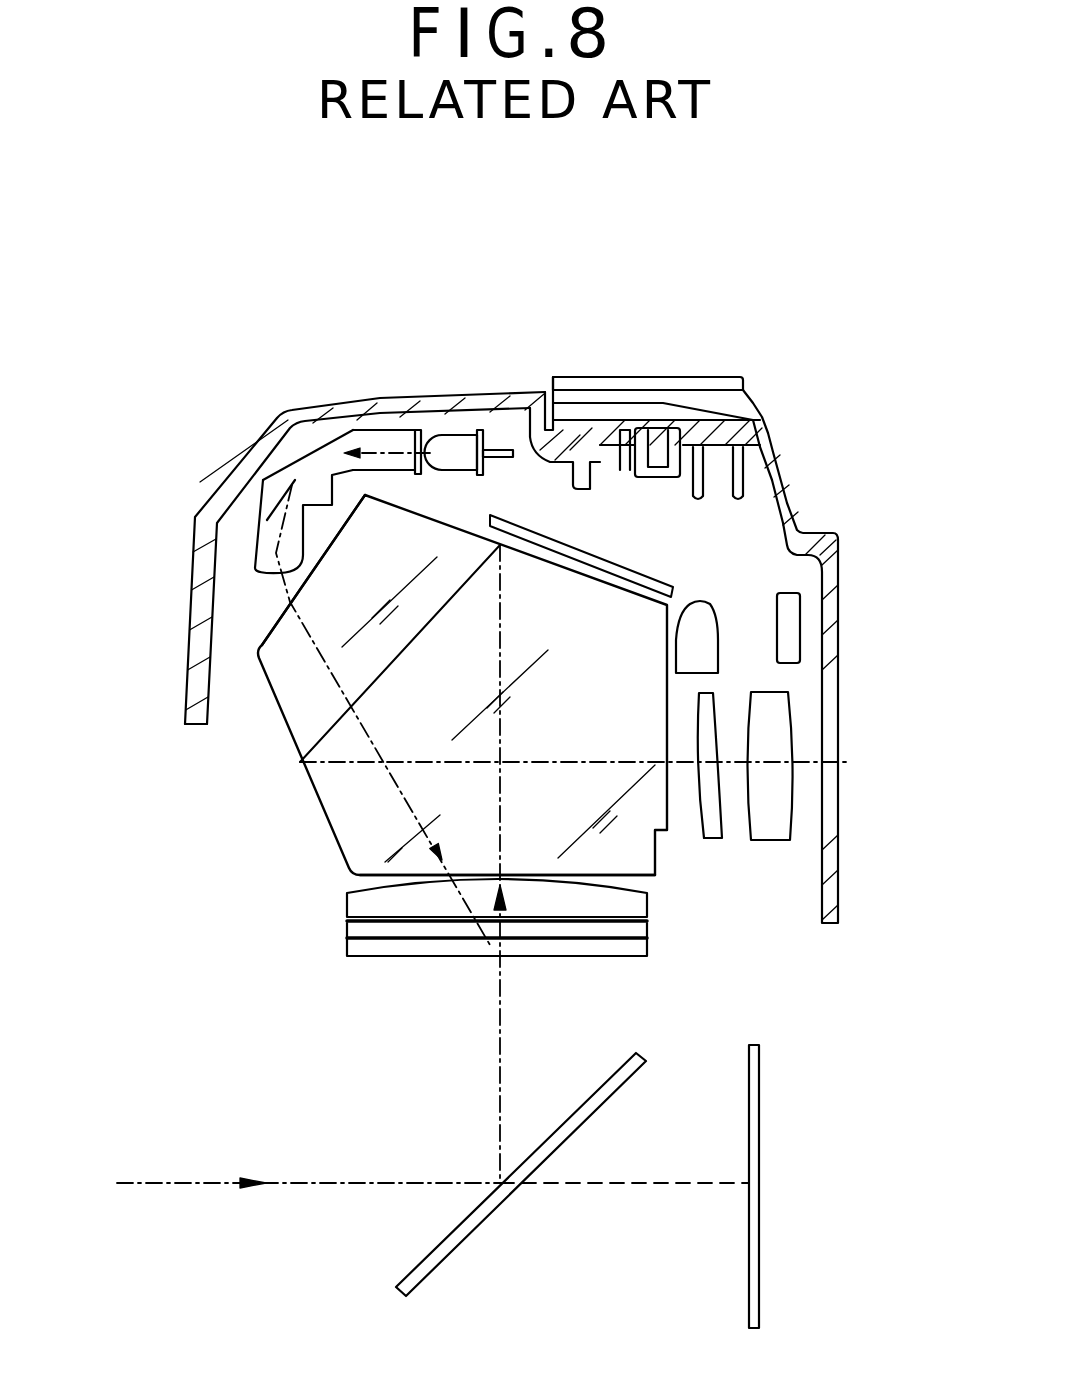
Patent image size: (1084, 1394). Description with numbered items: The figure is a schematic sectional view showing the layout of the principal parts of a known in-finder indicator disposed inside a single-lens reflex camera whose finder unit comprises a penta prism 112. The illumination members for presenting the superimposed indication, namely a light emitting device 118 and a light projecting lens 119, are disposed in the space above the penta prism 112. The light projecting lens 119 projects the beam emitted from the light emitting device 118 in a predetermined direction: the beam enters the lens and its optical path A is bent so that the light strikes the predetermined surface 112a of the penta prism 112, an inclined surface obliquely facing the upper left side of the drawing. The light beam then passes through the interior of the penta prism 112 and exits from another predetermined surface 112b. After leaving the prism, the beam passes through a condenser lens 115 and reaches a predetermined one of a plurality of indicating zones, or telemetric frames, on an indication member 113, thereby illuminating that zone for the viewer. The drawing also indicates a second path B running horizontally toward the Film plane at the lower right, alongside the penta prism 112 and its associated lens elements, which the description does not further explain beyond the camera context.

The light emitting device 118 is at (447, 430).
The light projecting lens 119 is at (275, 485).
The penta prism 112 is at (322, 813).
The predetermined surface 112a is at (256, 640).
The another predetermined surface 112b is at (360, 877).
The condenser lens 115 is at (348, 905).
The indication member 113 is at (348, 937).
The optical path A is at (303, 727).
The light beam B is at (160, 1181).
The film Film is at (760, 1211).